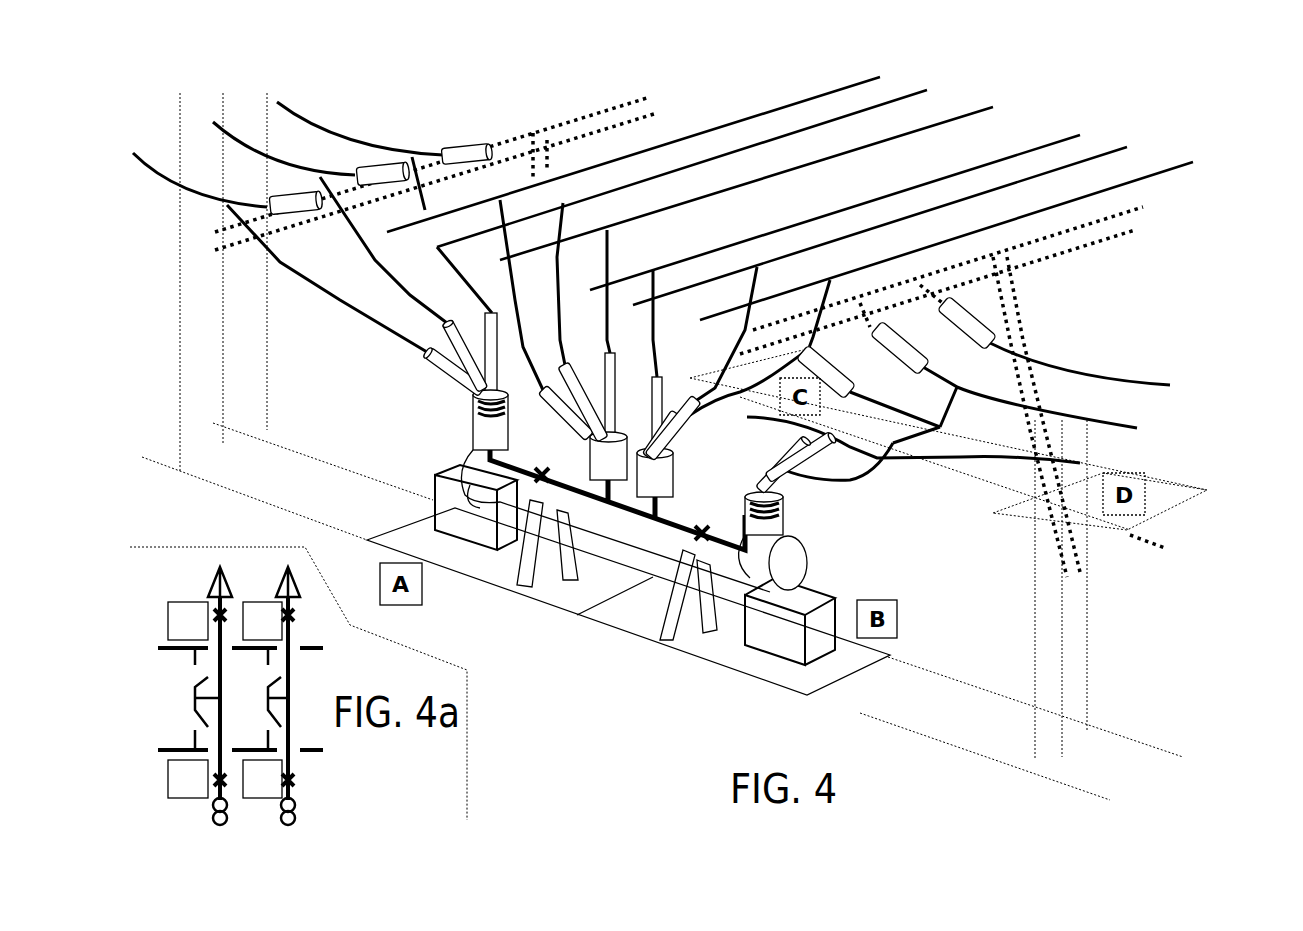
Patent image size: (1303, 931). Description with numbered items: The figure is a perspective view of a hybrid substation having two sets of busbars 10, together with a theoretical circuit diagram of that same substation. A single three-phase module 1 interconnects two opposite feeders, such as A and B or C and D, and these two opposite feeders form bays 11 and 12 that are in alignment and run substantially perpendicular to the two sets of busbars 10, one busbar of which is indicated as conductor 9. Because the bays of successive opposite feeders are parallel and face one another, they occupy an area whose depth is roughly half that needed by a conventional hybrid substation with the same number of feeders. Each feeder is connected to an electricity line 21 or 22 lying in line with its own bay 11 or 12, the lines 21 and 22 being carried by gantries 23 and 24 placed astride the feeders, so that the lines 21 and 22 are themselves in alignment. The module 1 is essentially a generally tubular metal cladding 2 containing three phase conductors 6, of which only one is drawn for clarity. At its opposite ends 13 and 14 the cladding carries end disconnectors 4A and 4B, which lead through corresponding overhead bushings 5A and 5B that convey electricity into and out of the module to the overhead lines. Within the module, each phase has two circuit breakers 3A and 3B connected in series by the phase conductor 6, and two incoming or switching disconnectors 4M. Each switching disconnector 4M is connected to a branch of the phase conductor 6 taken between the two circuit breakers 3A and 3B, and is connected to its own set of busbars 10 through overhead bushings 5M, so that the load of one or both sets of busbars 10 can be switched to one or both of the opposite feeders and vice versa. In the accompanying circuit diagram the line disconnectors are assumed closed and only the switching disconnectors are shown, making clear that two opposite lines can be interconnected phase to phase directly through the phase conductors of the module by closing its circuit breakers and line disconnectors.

In FIG. 4, the three-phase module 1 is at (617, 545).
In FIG. 4, the metal cladding 2 is at (700, 535).
In FIG. 4, the circuit breaker 3A is at (567, 467).
In FIG. 4, the circuit breaker 3B is at (707, 530).
In FIG. 4, the end disconnector 4A is at (462, 440).
In FIG. 4, the switching disconnector 4M is at (592, 458).
In FIG. 4, the end disconnector 4B is at (785, 500).
In FIG. 4, the overhead bushing 5A is at (453, 370).
In FIG. 4, the overhead bushing 5M is at (647, 430).
In FIG. 4, the overhead bushing 5B is at (765, 470).
In FIG. 4, the phase conductor 6 is at (625, 480).
In FIG. 4, the conductor rail 9 is at (1040, 137).
In FIG. 4, the set of busbars 10 is at (1005, 97).
In FIG. 4A, the set of busbars 10 is at (167, 664).
In FIG. 4, the bay 11 is at (365, 500).
In FIG. 4, the bay 12 is at (1200, 530).
In FIG. 4, the module end 13 is at (453, 445).
In FIG. 4, the module end 14 is at (790, 562).
In FIG. 4, the electricity line 21 is at (283, 87).
In FIG. 4, the electricity line 22 is at (1073, 355).
In FIG. 4, the gantry 23 is at (530, 115).
In FIG. 4, the gantry 24 is at (1098, 250).